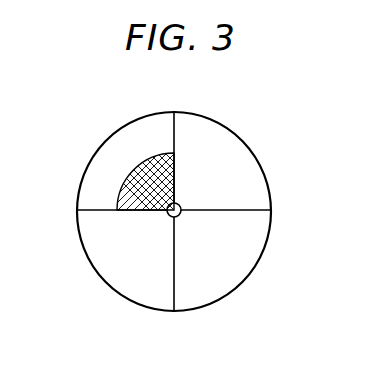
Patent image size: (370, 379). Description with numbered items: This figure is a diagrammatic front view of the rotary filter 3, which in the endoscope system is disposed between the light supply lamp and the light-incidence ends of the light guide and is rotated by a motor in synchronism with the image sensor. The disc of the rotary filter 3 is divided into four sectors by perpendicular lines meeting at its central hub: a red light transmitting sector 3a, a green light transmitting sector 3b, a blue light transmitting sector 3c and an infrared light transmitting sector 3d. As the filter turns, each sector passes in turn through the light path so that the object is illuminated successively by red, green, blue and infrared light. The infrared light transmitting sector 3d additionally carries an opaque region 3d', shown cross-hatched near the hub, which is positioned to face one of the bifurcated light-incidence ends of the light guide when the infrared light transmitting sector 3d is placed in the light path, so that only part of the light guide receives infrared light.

The rotary filter 3 is at (218, 116).
The red light transmitting sector 3a is at (255, 177).
The green light transmitting sector 3b is at (235, 272).
The blue light transmitting sector 3c is at (123, 272).
The infrared light transmitting sector 3d is at (106, 161).
The opaque region 3d' is at (127, 180).